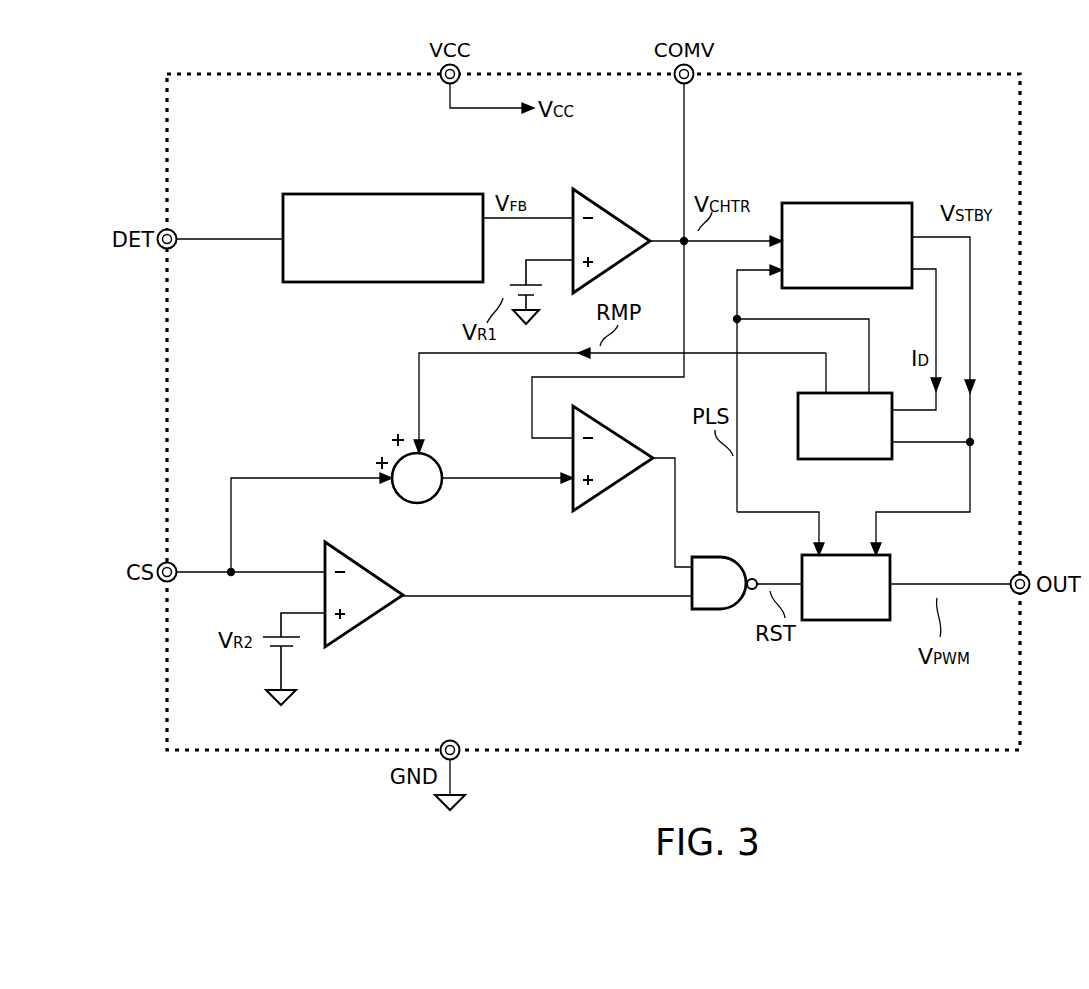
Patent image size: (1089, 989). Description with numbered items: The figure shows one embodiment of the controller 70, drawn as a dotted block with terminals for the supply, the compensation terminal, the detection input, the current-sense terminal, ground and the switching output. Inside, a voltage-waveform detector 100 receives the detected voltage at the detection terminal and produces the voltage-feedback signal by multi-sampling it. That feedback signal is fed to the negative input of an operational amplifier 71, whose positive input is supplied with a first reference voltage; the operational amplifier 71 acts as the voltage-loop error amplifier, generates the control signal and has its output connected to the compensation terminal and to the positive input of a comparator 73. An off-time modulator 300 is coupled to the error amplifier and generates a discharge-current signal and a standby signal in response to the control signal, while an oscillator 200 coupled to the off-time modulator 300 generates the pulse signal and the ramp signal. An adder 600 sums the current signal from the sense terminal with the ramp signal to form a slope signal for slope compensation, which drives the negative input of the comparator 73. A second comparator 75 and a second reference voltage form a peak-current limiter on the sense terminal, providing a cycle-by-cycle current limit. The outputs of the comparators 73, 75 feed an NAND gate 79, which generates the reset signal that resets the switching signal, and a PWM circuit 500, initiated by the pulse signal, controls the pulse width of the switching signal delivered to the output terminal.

The controller 70 is at (1005, 67).
The operational amplifier 71 is at (600, 193).
The comparator 73 is at (632, 430).
The comparator 75 is at (378, 617).
The NAND gate 79 is at (708, 612).
The voltage-waveform detector 100 is at (399, 286).
The oscillator 200 is at (866, 466).
The off-time modulator 300 is at (857, 200).
The PWM circuit 500 is at (860, 623).
The adder 600 is at (395, 498).